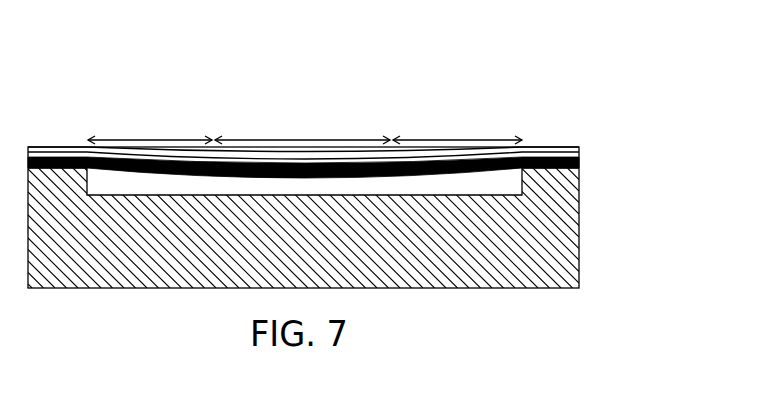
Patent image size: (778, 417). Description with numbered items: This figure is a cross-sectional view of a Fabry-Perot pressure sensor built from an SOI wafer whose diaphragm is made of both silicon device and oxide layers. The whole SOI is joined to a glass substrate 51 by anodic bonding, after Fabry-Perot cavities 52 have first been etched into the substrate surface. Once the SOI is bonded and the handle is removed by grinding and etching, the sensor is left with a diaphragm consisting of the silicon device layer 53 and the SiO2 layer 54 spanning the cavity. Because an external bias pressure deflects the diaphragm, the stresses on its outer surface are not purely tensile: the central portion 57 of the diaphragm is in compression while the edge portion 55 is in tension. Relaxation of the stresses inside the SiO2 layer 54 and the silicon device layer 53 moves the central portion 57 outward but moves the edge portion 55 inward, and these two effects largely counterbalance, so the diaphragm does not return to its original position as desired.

The glass substrate 51 is at (579, 288).
The Fabry-Perot cavities 52 is at (579, 203).
The silicon device layer 53 is at (579, 163).
The SiO2 layer 54 is at (580, 152).
The edge portion 55 is at (152, 127).
The central portion 57 is at (303, 143).